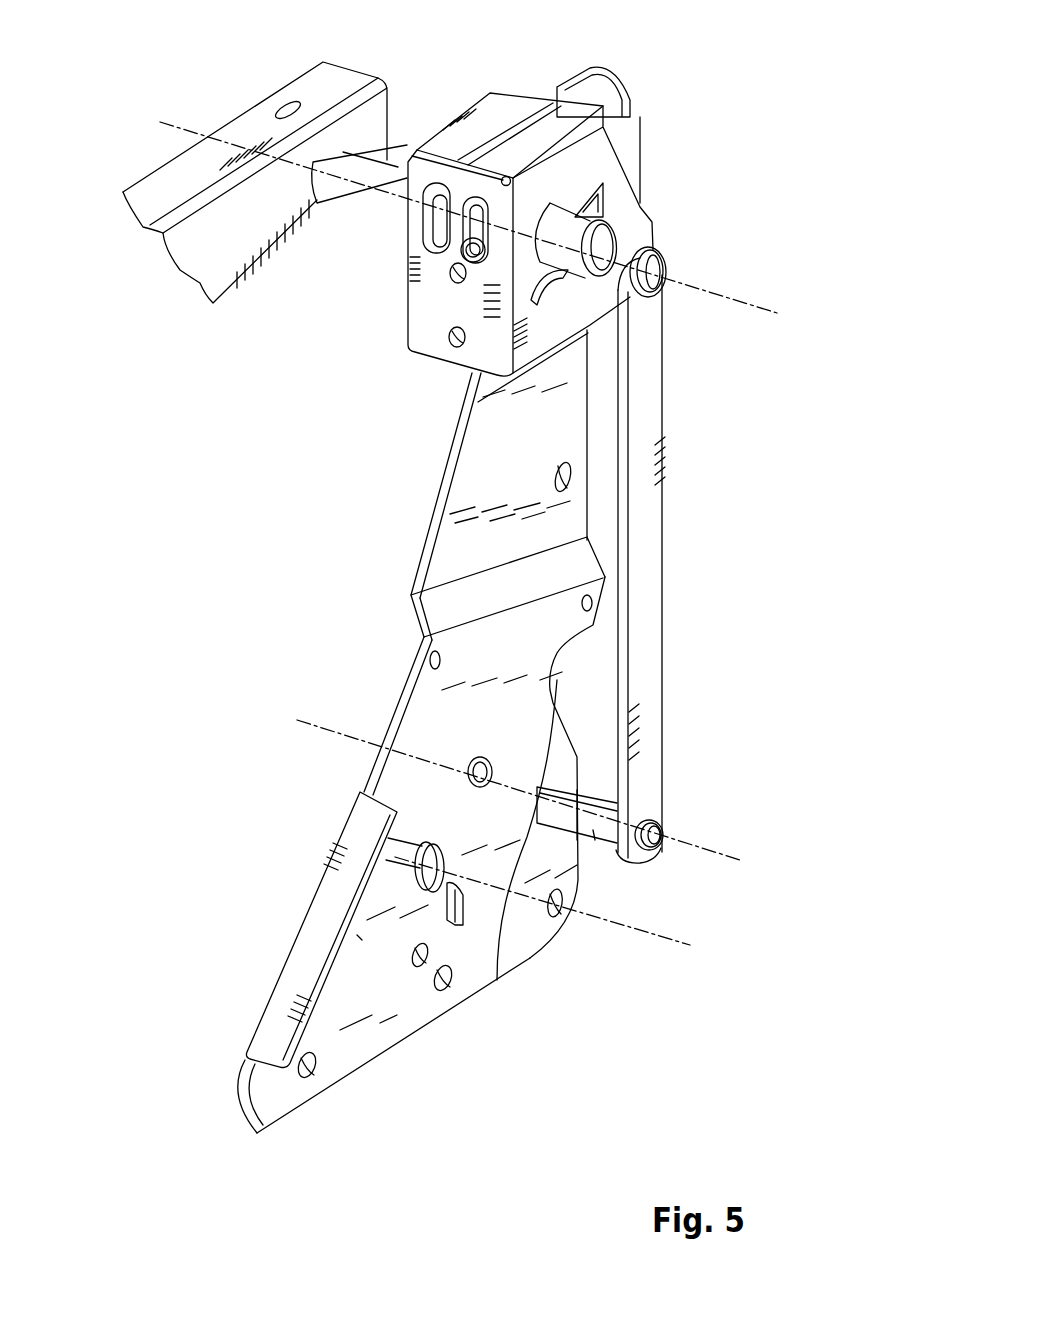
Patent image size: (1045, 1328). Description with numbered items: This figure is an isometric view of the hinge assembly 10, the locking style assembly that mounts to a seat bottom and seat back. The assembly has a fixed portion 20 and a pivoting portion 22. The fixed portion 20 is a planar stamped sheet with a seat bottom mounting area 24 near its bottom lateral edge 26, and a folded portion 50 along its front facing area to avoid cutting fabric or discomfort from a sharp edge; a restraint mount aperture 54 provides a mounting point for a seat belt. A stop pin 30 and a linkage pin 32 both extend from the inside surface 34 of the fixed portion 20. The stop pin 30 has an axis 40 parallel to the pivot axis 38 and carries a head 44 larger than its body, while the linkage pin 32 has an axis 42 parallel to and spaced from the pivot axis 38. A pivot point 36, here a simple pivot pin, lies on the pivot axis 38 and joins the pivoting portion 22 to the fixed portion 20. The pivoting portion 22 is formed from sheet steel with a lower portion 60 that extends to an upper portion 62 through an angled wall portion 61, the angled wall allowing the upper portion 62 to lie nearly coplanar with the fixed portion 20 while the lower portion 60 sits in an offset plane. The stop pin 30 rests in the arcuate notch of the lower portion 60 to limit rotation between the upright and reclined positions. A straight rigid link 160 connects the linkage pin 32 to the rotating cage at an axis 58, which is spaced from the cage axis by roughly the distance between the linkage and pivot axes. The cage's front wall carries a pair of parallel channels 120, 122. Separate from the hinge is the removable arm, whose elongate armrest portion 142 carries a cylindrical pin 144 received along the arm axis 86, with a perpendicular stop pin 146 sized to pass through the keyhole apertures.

The hinge assembly 10 is at (822, 182).
The fixed portion 20 is at (275, 901).
The pivoting portion 22 is at (428, 471).
The seat bottom mounting area 24 is at (345, 1072).
The bottom lateral edge 26 is at (470, 1000).
The stop pin 30 is at (392, 852).
The linkage pin 32 is at (594, 838).
The inside surface 34 is at (372, 1020).
The pivot point 36 is at (468, 758).
The pivot axis 38 is at (310, 728).
The stop pin axis 40 is at (667, 937).
The linkage pin axis 42 is at (723, 857).
The head 44 is at (458, 888).
The folded portion 50 is at (280, 1002).
The restraint mount aperture 54 is at (357, 935).
The axis 58 is at (757, 308).
The lower portion 60 is at (533, 697).
The angled wall portion 61 is at (433, 608).
The upper portion 62 is at (467, 530).
The arm axis 86 is at (220, 142).
The parallel channel 120 is at (443, 187).
The parallel channel 122 is at (472, 197).
The armrest portion 142 is at (167, 185).
The pin 144 is at (377, 203).
The stop pin 146 is at (449, 280).
The link 160 is at (647, 545).